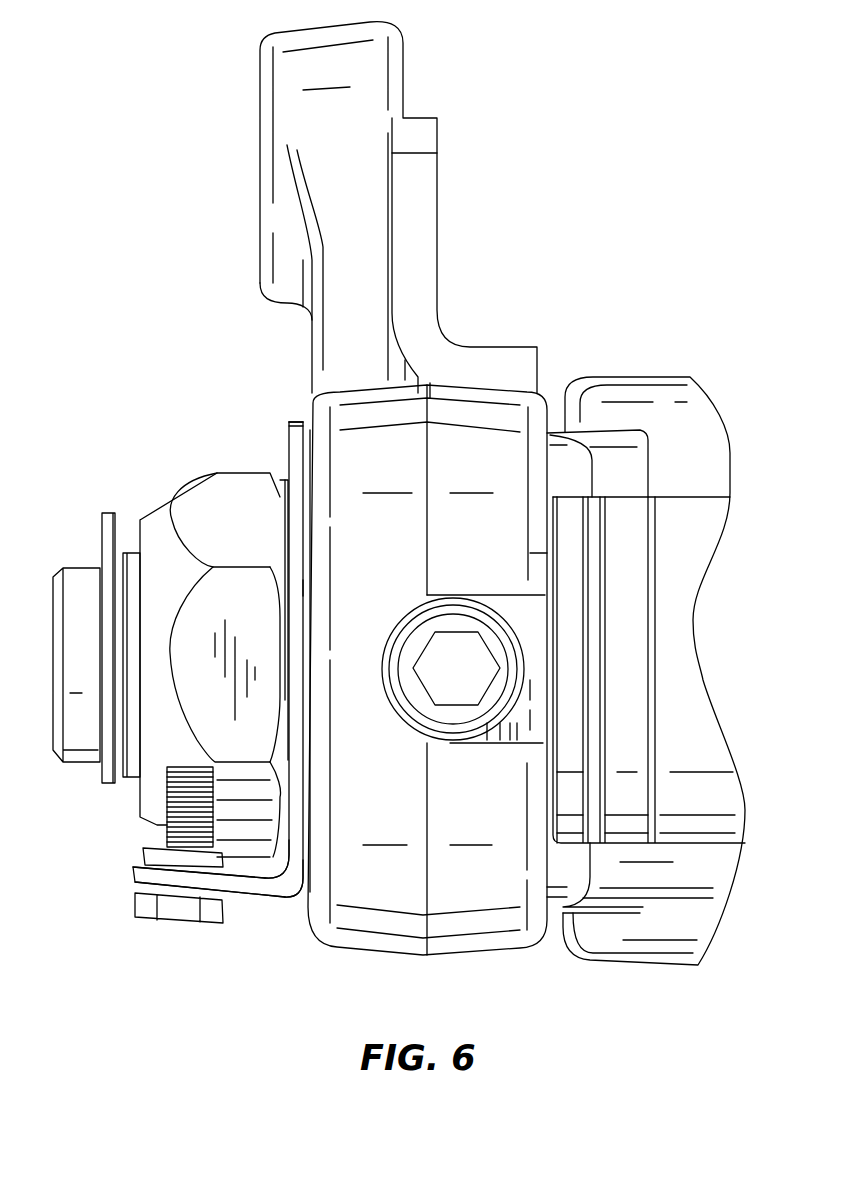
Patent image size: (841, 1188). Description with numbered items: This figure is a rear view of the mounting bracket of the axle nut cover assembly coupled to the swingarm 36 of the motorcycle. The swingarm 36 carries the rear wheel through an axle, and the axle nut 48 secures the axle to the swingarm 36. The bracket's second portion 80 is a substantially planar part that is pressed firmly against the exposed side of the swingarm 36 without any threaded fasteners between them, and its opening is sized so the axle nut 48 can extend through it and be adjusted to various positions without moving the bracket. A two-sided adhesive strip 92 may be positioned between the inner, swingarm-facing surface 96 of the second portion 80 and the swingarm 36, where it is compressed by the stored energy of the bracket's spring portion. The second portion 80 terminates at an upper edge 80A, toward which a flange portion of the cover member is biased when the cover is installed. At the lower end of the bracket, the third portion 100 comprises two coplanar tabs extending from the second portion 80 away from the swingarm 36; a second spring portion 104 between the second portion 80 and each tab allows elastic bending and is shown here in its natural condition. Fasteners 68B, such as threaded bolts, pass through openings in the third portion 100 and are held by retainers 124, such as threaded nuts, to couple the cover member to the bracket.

The swingarm 36 is at (465, 925).
The axle nut 48 is at (218, 508).
The fasteners 68B is at (177, 908).
The second portion 80 is at (295, 440).
The upper edge 80A is at (295, 422).
The two-sided adhesive strip 92 is at (303, 423).
The inner, swingarm-facing surface 96 is at (303, 588).
The third portion 100 is at (133, 868).
The second spring portion 104 is at (283, 897).
The retainers 124 is at (152, 857).